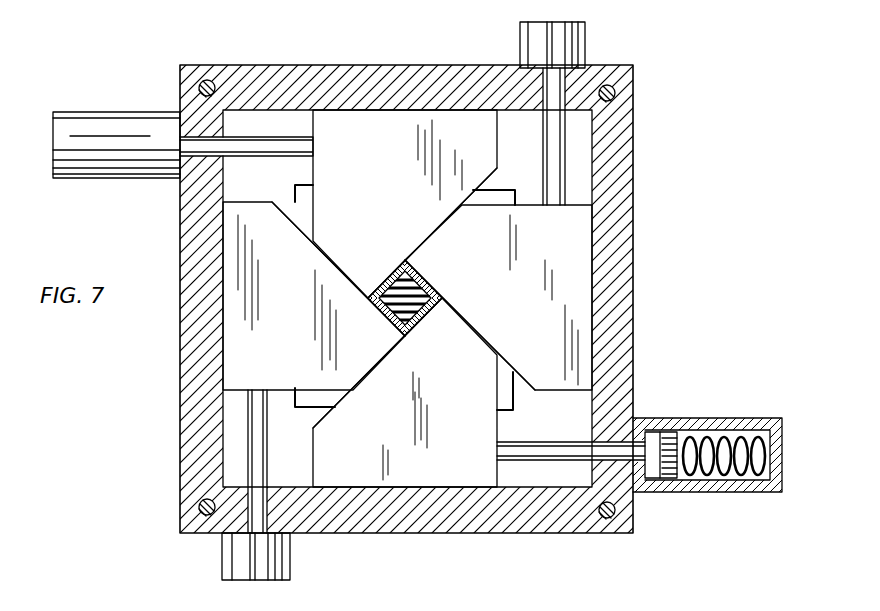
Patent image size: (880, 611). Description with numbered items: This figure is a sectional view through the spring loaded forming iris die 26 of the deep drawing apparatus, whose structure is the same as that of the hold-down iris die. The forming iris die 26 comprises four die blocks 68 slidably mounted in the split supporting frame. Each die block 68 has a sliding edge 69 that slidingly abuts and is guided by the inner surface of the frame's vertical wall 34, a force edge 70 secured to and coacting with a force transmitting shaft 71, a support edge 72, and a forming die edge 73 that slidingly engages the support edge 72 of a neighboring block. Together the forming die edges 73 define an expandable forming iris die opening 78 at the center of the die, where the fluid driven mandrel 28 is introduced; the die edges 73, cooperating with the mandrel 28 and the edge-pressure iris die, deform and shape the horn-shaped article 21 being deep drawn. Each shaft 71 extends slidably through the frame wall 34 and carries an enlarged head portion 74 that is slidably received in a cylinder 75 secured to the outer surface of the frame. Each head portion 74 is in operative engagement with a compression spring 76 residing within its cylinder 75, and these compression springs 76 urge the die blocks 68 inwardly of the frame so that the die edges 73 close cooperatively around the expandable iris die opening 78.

The forming iris die 26 is at (670, 227).
The vertical wall 34 is at (606, 311).
The sliding edge 69 is at (592, 255).
The die block 68 is at (410, 193).
The support edge 72 is at (323, 245).
The mandrel 28 is at (413, 283).
The forming die edge 73 is at (392, 277).
The horn-shaped article 21 is at (432, 320).
The forming iris die opening 78 is at (446, 291).
The force edge 70 is at (312, 172).
The force transmitting shaft 71 is at (272, 158).
The cylinder 75 is at (107, 112).
The enlarged head portion 74 is at (668, 440).
The compression spring 76 is at (731, 432).